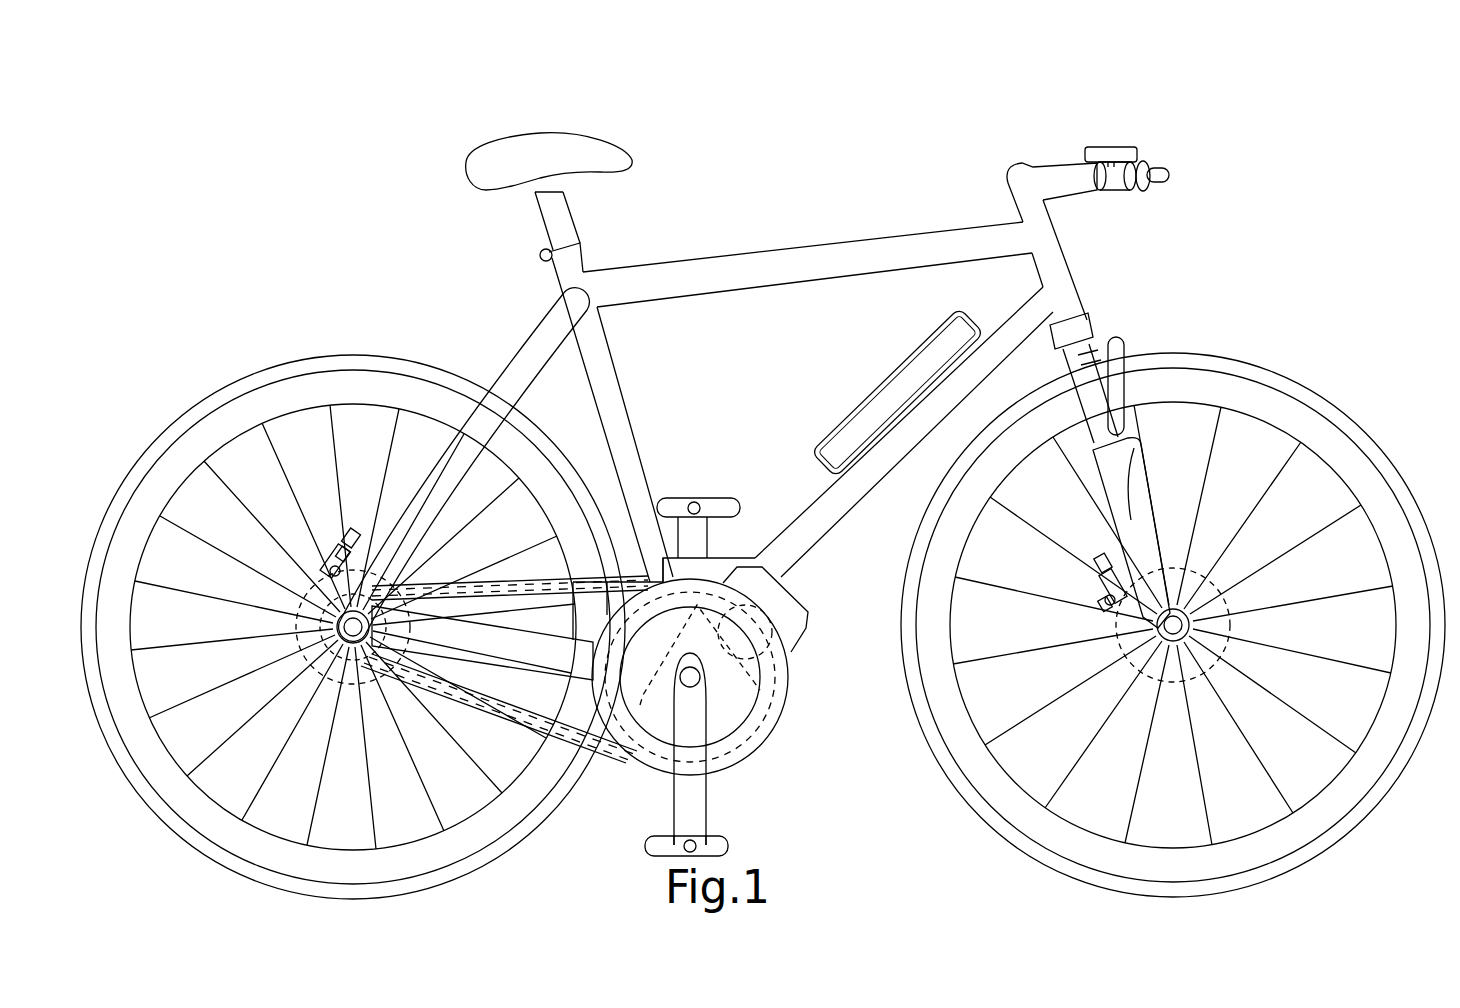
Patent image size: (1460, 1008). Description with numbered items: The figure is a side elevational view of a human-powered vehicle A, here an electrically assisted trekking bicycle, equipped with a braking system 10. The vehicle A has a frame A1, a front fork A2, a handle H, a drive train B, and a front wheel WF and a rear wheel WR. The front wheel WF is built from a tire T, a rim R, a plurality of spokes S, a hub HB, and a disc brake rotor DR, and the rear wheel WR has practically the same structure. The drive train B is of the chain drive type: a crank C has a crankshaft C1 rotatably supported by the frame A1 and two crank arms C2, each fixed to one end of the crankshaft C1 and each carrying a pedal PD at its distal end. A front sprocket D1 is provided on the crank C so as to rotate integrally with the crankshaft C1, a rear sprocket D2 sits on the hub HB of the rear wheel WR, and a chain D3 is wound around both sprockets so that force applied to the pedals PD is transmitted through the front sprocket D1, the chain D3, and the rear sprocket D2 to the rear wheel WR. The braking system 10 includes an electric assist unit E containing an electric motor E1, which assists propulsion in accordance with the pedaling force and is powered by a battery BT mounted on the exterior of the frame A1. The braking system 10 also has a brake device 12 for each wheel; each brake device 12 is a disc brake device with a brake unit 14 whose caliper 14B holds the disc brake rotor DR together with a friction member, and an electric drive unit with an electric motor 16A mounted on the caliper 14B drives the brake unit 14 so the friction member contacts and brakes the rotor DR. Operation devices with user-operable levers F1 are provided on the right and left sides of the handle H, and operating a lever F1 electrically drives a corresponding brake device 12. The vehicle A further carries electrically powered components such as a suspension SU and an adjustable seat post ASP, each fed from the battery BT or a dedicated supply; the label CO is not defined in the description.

The human-powered vehicle A is at (1191, 50).
The braking system 10 is at (1273, 132).
The frame A1 is at (952, 173).
The front fork A2 is at (1142, 488).
The rear wheel WR is at (160, 370).
The front wheel WF is at (1291, 344).
The tire T is at (345, 355).
The rim R is at (268, 385).
The spokes S is at (210, 662).
The hub HB is at (370, 630).
The disc brake rotor DR is at (292, 597).
The brake device 12 is at (285, 492).
The brake unit 14 is at (318, 547).
The caliper 14B is at (320, 553).
The electric motor 16A is at (1110, 562).
The adjustable seat post ASP is at (570, 212).
The battery BT is at (877, 378).
The suspension SU is at (1078, 393).
The handle H is at (1113, 192).
The lever F1 is at (1172, 177).
The controller CO is at (1197, 272).
The pedal PD is at (695, 497).
The crank C is at (800, 788).
The crankshaft C1 is at (702, 678).
The crank arms C2 is at (708, 808).
The drive train B is at (780, 841).
The front sprocket D1 is at (778, 740).
The rear sprocket D2 is at (318, 680).
The chain D3 is at (445, 715).
The electric assist unit E is at (808, 600).
The electric motor E1 is at (815, 634).